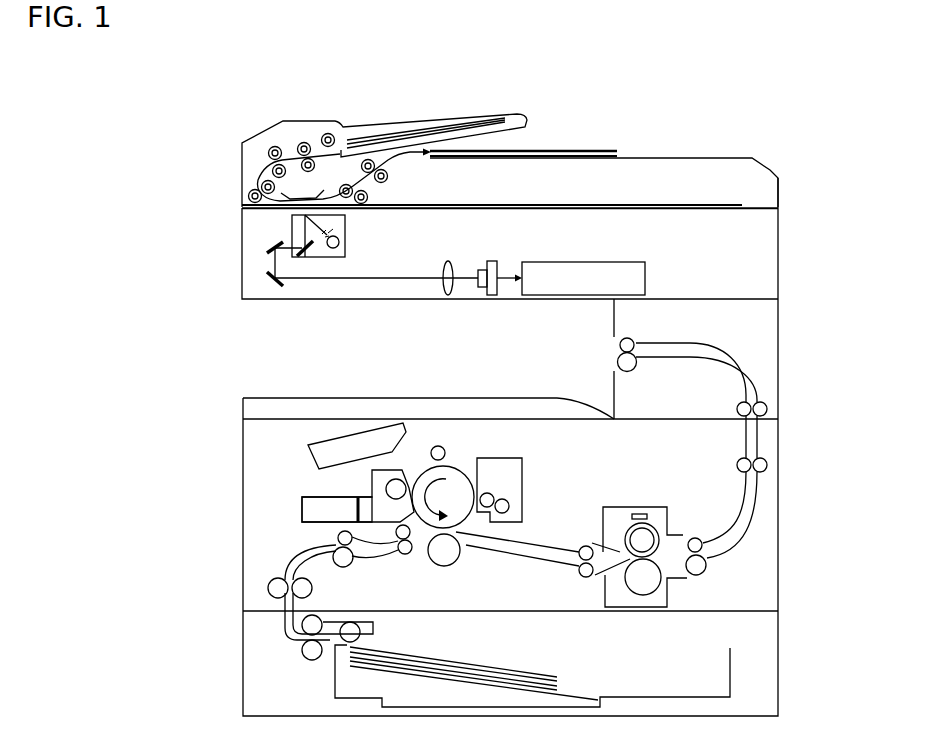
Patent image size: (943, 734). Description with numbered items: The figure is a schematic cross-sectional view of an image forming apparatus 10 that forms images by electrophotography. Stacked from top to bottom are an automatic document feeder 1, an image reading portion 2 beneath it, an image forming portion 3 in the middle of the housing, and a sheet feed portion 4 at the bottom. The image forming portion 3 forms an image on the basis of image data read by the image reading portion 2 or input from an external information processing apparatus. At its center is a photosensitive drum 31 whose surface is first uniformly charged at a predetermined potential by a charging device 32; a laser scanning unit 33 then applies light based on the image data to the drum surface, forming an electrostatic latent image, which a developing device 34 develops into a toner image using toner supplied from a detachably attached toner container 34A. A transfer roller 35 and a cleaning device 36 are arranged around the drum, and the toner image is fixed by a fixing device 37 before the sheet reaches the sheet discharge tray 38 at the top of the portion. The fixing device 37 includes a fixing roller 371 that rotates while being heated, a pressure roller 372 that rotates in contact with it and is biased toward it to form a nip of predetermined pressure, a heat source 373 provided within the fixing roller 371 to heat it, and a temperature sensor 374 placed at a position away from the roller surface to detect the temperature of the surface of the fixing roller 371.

The image forming apparatus 10 is at (231, 89).
The automatic document feeder 1 is at (242, 163).
The image reading portion 2 is at (242, 263).
The image forming portion 3 is at (260, 439).
The sheet feed portion 4 is at (242, 666).
The photosensitive drum 31 is at (460, 462).
The charging device 32 is at (431, 456).
The laser scanning unit 33 is at (310, 458).
The developing device 34 is at (371, 479).
The toner container 34A is at (301, 522).
The transfer roller 35 is at (445, 568).
The cleaning device 36 is at (503, 457).
The fixing device 37 is at (634, 559).
The sheet discharge tray 38 is at (527, 398).
The fixing roller 371 is at (625, 531).
The pressure roller 372 is at (640, 597).
The heat source 373 is at (655, 530).
The temperature sensor 374 is at (640, 509).